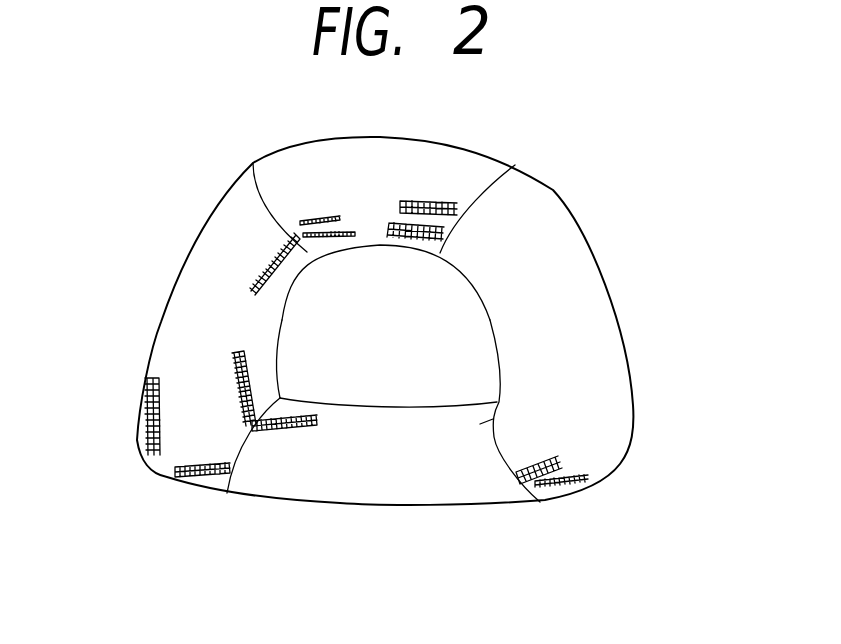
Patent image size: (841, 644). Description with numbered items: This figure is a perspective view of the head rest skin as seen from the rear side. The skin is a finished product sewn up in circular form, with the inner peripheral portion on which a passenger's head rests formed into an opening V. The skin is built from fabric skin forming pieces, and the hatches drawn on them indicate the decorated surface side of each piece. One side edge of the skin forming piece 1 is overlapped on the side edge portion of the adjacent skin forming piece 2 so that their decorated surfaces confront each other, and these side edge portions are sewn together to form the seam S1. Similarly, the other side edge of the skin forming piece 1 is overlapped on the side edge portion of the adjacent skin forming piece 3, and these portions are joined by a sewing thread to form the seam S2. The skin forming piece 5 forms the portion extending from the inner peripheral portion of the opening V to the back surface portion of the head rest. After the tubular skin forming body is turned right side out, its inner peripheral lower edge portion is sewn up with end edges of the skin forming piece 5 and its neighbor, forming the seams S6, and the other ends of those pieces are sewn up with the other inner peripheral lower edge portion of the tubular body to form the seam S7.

The skin forming piece 1 is at (335, 178).
The skin forming piece 2 is at (577, 297).
The skin forming piece 3 is at (180, 335).
The skin forming piece 5 is at (347, 473).
The opening V is at (386, 326).
The seam S1 is at (473, 200).
The seam S2 is at (272, 211).
The seams S6 is at (230, 447).
The seam S7 is at (502, 448).